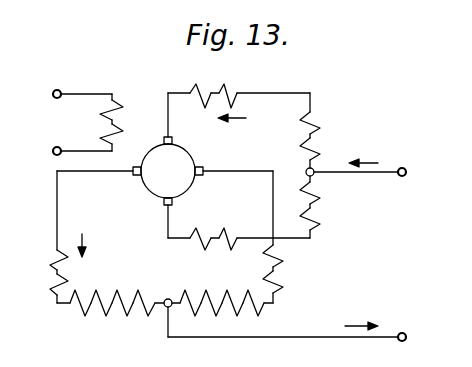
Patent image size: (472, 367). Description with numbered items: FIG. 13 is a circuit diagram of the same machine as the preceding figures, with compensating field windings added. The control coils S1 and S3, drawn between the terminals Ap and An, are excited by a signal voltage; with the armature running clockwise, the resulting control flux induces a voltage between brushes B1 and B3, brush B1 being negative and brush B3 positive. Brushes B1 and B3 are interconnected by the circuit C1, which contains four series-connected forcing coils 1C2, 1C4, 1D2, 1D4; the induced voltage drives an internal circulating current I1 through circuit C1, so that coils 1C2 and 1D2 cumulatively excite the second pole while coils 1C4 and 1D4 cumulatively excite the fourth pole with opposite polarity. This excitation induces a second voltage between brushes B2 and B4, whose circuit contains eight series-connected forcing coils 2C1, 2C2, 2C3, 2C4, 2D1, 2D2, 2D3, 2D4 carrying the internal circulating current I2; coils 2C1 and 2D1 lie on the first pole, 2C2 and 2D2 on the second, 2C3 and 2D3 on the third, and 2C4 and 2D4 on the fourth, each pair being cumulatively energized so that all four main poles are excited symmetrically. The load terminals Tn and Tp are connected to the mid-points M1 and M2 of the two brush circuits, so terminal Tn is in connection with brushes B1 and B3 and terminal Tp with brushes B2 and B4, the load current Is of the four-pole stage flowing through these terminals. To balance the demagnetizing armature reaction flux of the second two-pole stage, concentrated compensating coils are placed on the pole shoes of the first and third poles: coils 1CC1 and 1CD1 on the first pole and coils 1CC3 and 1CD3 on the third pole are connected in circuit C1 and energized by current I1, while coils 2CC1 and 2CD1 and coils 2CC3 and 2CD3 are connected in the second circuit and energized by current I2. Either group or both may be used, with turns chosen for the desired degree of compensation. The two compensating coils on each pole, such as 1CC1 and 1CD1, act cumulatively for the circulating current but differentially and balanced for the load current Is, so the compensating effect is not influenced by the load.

The positive armature terminal Ap is at (53, 94).
The negative armature terminal An is at (53, 151).
The load terminal Tn is at (406, 172).
The load terminal Tp is at (406, 337).
The control coil S1 is at (101, 113).
The control coil S3 is at (101, 137).
The brush B1 is at (173, 141).
The brush B2 is at (203, 167).
The brush B3 is at (164, 202).
The brush B4 is at (135, 167).
The compensating coil 1CC1 is at (197, 86).
The compensating coil 1CC3 is at (225, 87).
The circuit C1 is at (285, 93).
The internal circulating current I1 is at (232, 125).
The field winding 1C2 is at (320, 128).
The field winding 1C4 is at (320, 154).
The mid-point M1 is at (306, 172).
The load current Is is at (361, 237).
The field winding 1D2 is at (320, 198).
The field winding 1D4 is at (320, 224).
The compensating coil 1CD1 is at (204, 248).
The compensating coil 1CD3 is at (224, 230).
The compensating coil 2CC1 is at (51, 264).
The compensating coil 2CC3 is at (51, 288).
The internal circulating current I2 is at (90, 245).
The field winding 2C1 is at (84, 314).
The field winding 2C2 is at (97, 291).
The field winding 2C3 is at (127, 314).
The field winding 2C4 is at (139, 291).
The mid-point M2 is at (166, 300).
The field winding 2D1 is at (194, 314).
The field winding 2D2 is at (207, 291).
The field winding 2D3 is at (237, 314).
The field winding 2D4 is at (252, 286).
The compensating coil 2CD1 is at (283, 261).
The compensating coil 2CD3 is at (283, 287).